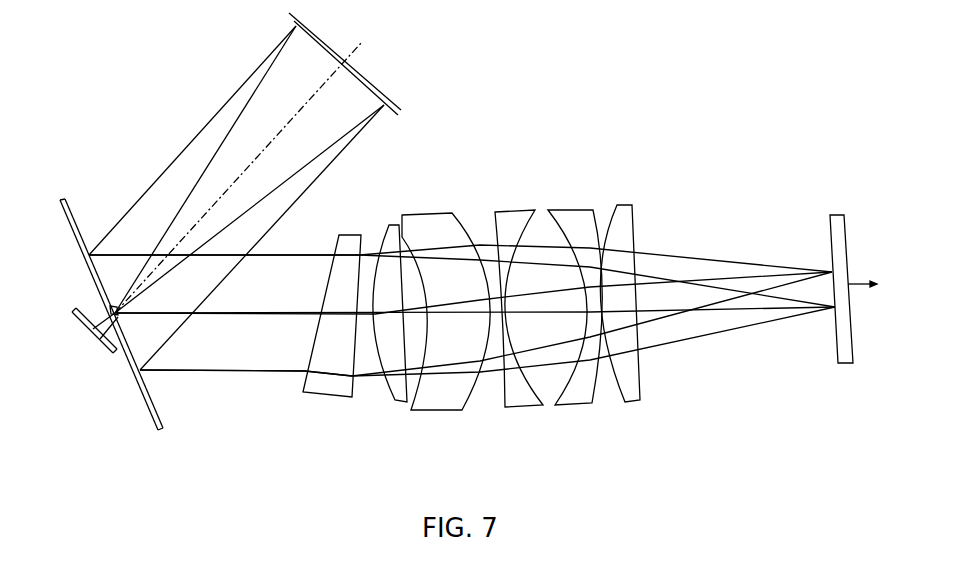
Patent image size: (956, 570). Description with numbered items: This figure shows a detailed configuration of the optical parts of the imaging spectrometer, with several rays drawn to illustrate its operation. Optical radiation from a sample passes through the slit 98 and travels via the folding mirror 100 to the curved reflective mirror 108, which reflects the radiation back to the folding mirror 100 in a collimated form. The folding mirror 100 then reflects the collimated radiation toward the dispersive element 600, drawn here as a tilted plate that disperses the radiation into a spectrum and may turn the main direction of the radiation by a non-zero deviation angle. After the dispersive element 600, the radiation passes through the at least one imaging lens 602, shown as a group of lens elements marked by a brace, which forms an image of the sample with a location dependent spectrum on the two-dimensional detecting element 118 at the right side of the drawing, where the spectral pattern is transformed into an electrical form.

The slit 98 is at (90, 330).
The folding mirror 100 is at (147, 408).
The curved reflective mirror 108 is at (317, 27).
The two-dimensional detecting element 118 is at (837, 215).
The dispersive element 600 is at (350, 359).
The imaging lens 602 is at (514, 354).